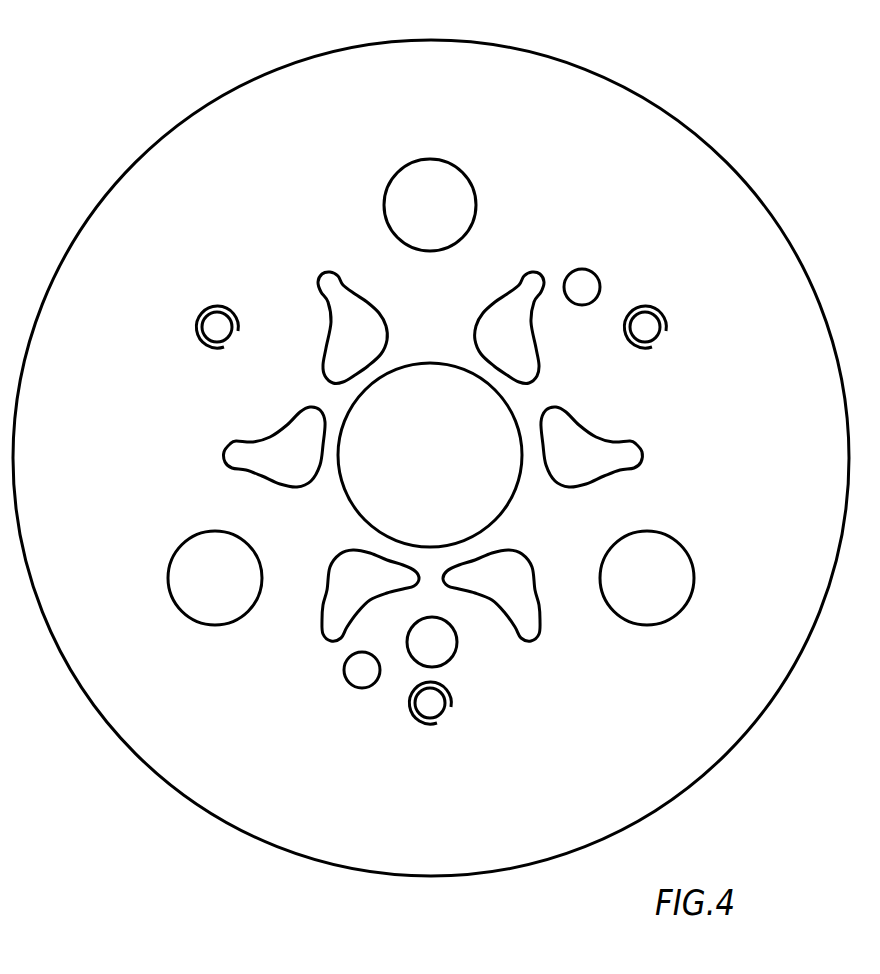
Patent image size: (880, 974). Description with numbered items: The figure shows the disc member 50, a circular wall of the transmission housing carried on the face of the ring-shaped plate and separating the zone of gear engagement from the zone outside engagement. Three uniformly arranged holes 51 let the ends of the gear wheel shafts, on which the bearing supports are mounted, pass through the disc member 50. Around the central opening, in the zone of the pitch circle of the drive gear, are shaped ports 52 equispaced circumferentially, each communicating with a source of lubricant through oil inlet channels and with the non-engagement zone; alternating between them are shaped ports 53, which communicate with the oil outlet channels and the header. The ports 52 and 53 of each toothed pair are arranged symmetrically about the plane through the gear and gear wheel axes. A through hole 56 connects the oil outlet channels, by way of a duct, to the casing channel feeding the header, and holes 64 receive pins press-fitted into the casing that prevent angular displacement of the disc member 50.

The disc member 50 is at (610, 100).
The holes 51 is at (412, 178).
The shaped ports 52 is at (242, 450).
The shaped ports 53 is at (325, 285).
The through hole 56 is at (447, 650).
The holes 64 is at (583, 282).